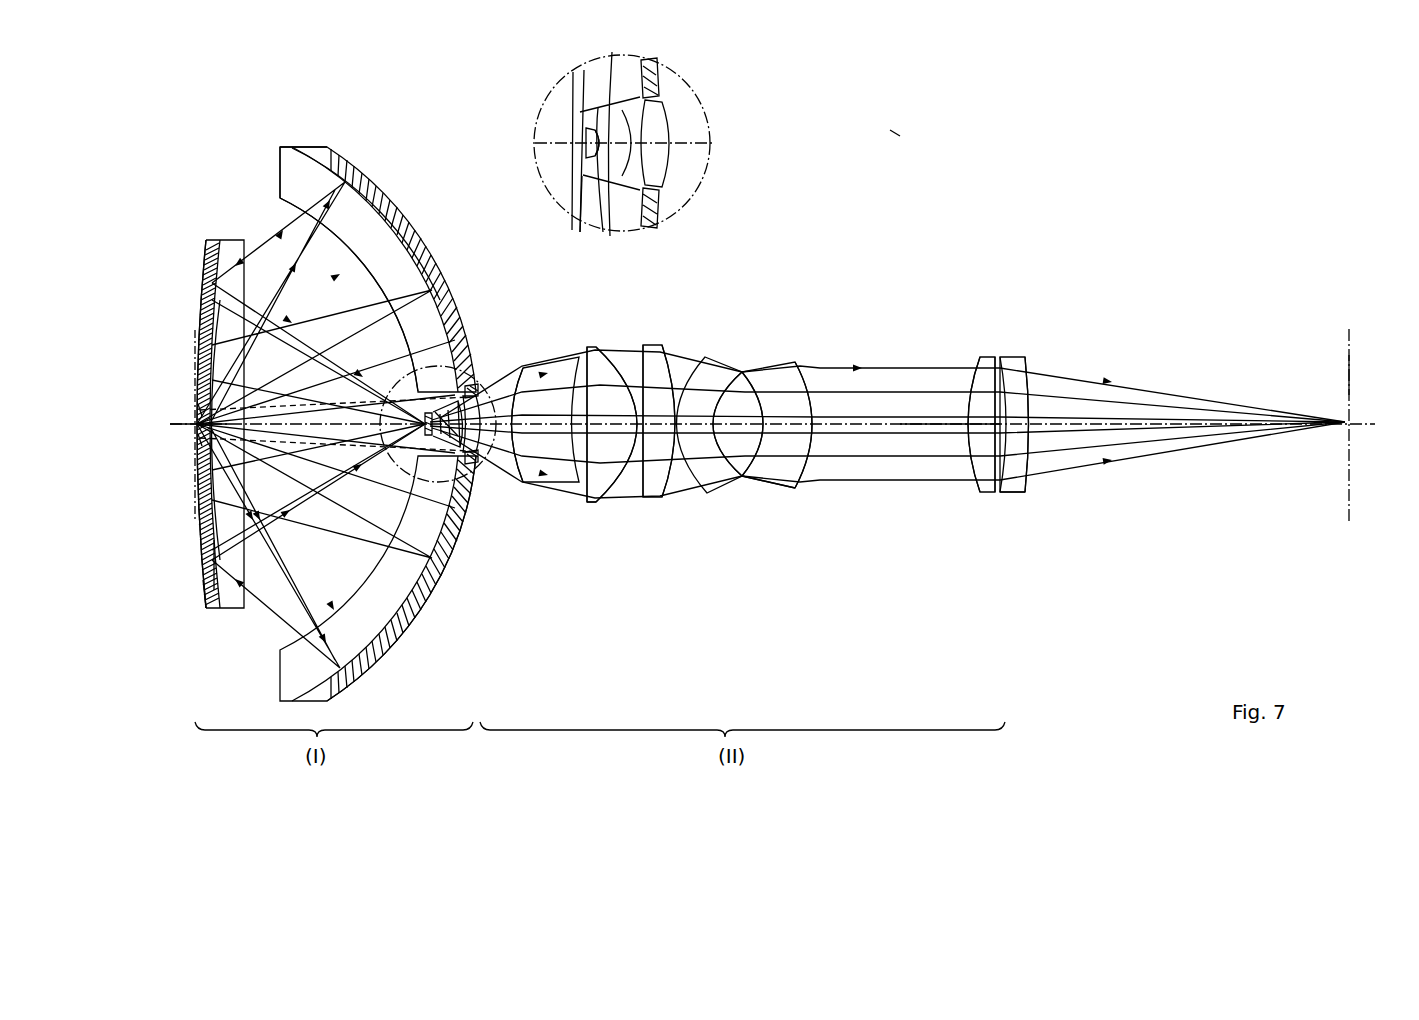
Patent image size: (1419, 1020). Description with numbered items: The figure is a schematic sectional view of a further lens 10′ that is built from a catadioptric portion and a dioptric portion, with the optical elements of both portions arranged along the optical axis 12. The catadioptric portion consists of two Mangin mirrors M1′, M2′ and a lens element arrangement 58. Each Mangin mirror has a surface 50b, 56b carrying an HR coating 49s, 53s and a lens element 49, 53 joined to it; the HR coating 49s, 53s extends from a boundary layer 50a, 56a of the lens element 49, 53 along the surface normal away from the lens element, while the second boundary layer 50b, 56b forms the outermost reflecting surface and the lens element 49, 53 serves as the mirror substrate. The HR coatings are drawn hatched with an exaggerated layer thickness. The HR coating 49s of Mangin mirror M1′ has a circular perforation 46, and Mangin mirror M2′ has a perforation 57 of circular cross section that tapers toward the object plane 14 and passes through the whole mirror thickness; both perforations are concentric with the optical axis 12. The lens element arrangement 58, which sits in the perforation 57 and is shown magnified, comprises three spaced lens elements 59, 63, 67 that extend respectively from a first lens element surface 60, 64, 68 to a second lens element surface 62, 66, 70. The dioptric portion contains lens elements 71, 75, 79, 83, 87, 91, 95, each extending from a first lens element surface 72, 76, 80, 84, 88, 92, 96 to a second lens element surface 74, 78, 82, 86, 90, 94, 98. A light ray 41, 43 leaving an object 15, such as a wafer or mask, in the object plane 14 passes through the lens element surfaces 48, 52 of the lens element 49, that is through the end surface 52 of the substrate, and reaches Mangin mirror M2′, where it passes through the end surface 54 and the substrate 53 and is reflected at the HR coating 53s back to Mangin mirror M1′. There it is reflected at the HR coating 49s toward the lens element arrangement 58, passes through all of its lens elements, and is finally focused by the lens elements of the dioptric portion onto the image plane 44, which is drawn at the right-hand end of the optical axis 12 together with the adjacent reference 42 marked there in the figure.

The lens 10′ is at (895, 128).
The optical axis 12 is at (940, 428).
The object plane 14 is at (197, 345).
The object 15 is at (197, 424).
The light ray 41 is at (254, 240).
The image plane 42 is at (1352, 424).
The light ray 43 is at (305, 582).
The image plane 44 is at (1352, 370).
The circular perforation 46 is at (200, 410).
The lens element surface 48 is at (200, 440).
The lens element 49 is at (228, 602).
The HR coating 49s is at (205, 284).
The boundary layer 50a is at (214, 566).
The surface 50b is at (200, 600).
The end surface 52 is at (238, 517).
The lens element 53 is at (290, 156).
The HR coating 53s is at (412, 628).
The end surface 54 is at (362, 258).
The boundary layer 56a is at (380, 232).
The surface 56b is at (372, 174).
The perforation 57 is at (428, 436).
The lens element arrangement 58 is at (440, 475).
The lens element 59 is at (588, 128).
The first lens element surface 60 is at (584, 140).
The second lens element surface 62 is at (577, 212).
The lens element 63 is at (617, 100).
The first lens element surface 64 is at (587, 90).
The second lens element surface 66 is at (605, 205).
The lens element 67 is at (660, 116).
The first lens element surface 68 is at (650, 64).
The second lens element surface 70 is at (662, 190).
The lens element 71 is at (530, 470).
The first lens element surface 72 is at (528, 372).
The second lens element surface 74 is at (590, 356).
The lens element 75 is at (616, 358).
The first lens element surface 76 is at (584, 478).
The second lens element surface 78 is at (616, 480).
The lens element 79 is at (648, 358).
The first lens element surface 80 is at (640, 482).
The second lens element surface 82 is at (668, 480).
The lens element 83 is at (714, 362).
The first lens element surface 84 is at (702, 478).
The second lens element surface 86 is at (750, 368).
The lens element 87 is at (790, 476).
The first lens element surface 88 is at (757, 470).
The second lens element surface 90 is at (796, 370).
The lens element 91 is at (978, 405).
The first lens element surface 92 is at (972, 378).
The second lens element surface 94 is at (988, 462).
The lens element 95 is at (1018, 380).
The first lens element surface 96 is at (1005, 378).
The second lens element surface 98 is at (1015, 462).
The Mangin mirror M1′ is at (232, 228).
The Mangin mirror M2′ is at (314, 140).